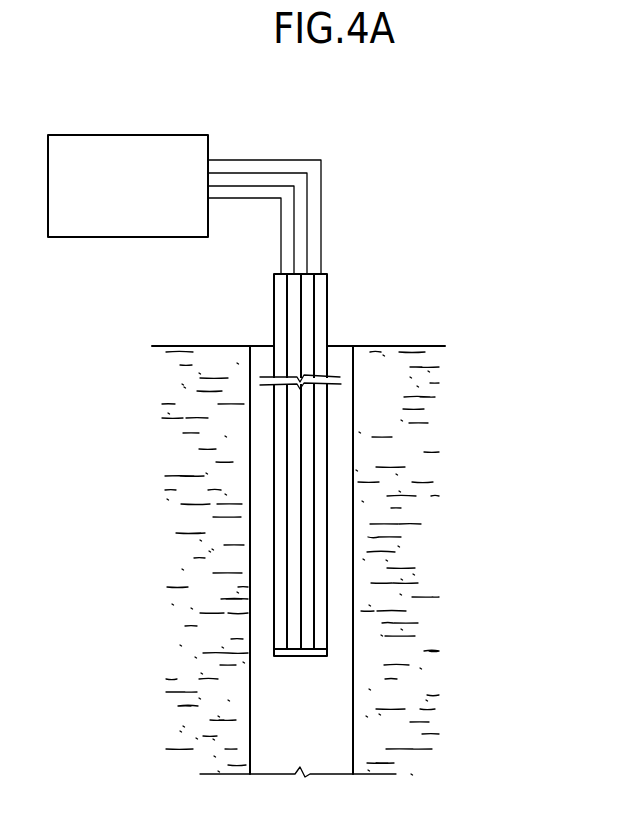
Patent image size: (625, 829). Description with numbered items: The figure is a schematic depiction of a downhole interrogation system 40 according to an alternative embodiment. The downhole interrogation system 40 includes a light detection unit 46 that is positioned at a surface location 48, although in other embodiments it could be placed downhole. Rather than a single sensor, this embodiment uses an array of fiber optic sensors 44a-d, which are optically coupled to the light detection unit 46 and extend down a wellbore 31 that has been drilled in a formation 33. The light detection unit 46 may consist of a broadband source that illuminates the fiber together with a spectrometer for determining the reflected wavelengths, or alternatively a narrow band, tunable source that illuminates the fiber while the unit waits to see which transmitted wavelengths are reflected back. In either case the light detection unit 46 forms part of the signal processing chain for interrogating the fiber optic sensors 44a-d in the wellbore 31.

The light detection unit 46 is at (140, 135).
The downhole interrogation system 40 is at (368, 163).
The surface location 48 is at (195, 346).
The wellbore 31 is at (231, 422).
The formation 33 is at (212, 498).
The fiber optic sensors 44a-d is at (317, 625).